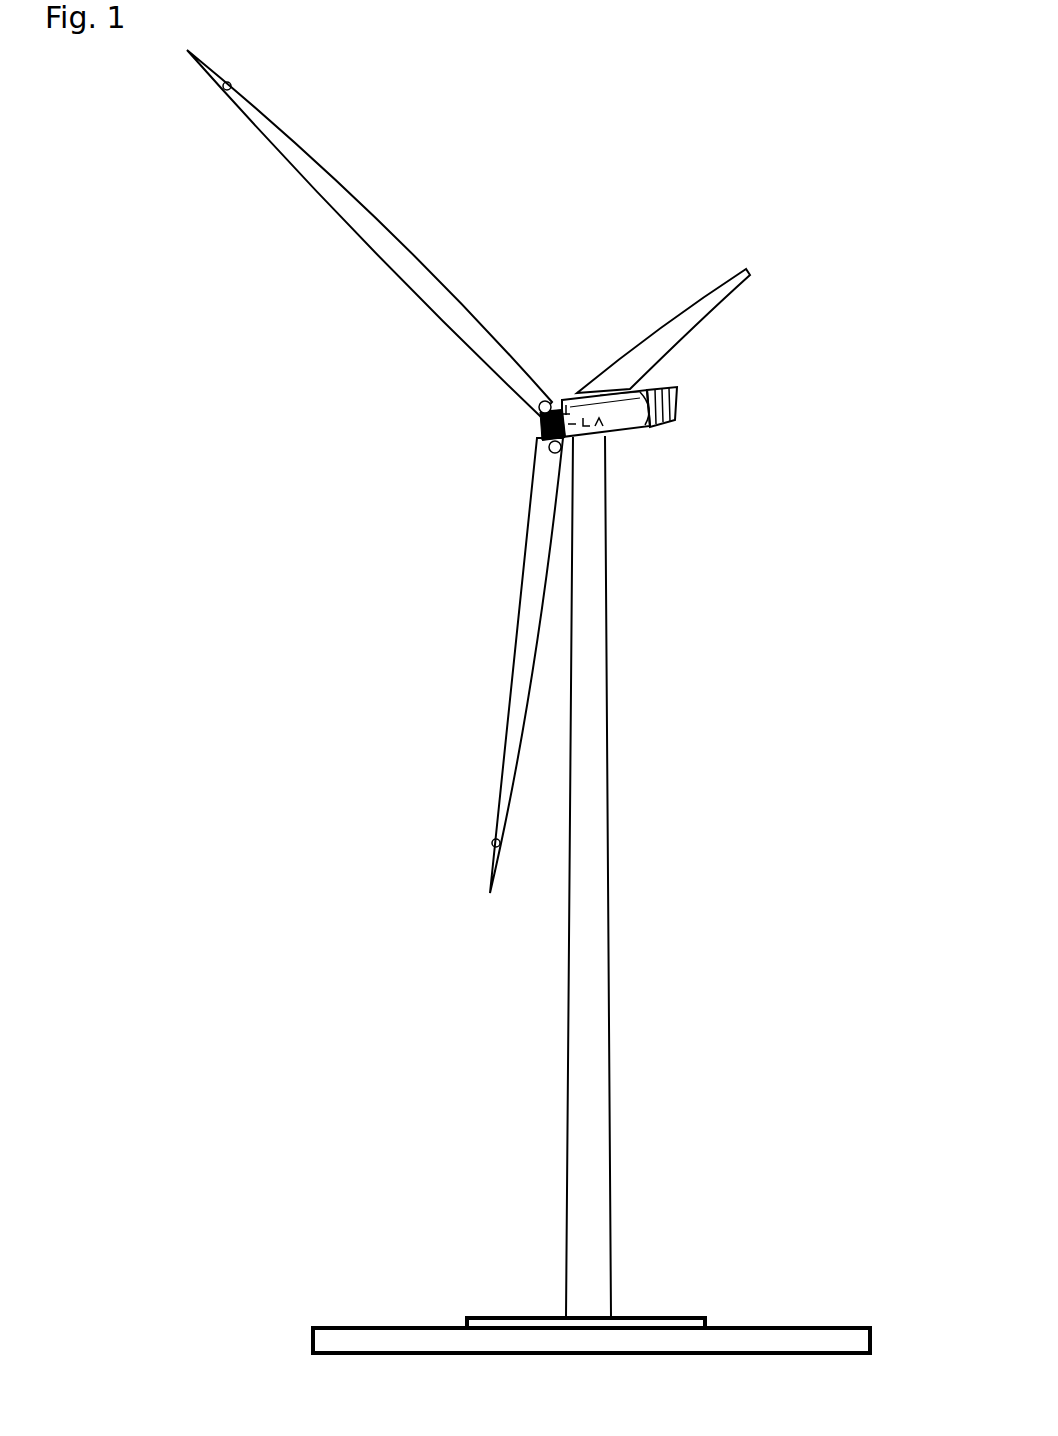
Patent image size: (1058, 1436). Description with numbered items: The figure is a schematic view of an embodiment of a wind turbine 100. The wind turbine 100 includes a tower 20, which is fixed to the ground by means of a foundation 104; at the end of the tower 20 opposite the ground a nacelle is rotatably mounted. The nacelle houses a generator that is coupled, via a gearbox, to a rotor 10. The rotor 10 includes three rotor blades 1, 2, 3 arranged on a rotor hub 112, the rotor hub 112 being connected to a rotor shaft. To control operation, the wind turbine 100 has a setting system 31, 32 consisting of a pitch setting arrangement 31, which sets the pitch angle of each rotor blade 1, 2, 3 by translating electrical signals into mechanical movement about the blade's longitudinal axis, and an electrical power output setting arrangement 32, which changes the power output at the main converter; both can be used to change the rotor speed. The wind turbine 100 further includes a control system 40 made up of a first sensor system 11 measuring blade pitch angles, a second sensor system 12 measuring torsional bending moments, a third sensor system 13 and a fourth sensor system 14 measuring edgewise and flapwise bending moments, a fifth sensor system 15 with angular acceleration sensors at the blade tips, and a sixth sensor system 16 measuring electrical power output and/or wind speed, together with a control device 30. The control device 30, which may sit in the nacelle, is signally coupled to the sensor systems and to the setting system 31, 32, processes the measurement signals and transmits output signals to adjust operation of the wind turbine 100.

The rotor blade 1 is at (345, 208).
The rotor blade 2 is at (748, 272).
The rotor blade 3 is at (528, 596).
The rotor 10 is at (566, 322).
The first sensor system 11 is at (633, 515).
The second sensor system 12 is at (551, 411).
The third sensor system 13 is at (563, 423).
The fourth sensor system 14 is at (553, 438).
The fifth sensor system 15 is at (231, 83).
The sixth sensor system 16 is at (550, 401).
The tower 20 is at (578, 987).
The control device 30 is at (632, 432).
The pitch setting arrangement 31 is at (567, 396).
The electrical power output setting arrangement 32 is at (593, 422).
The control system 40 is at (696, 429).
The wind turbine 100 is at (706, 744).
The foundation 104 is at (710, 1342).
The rotor hub 112 is at (549, 448).